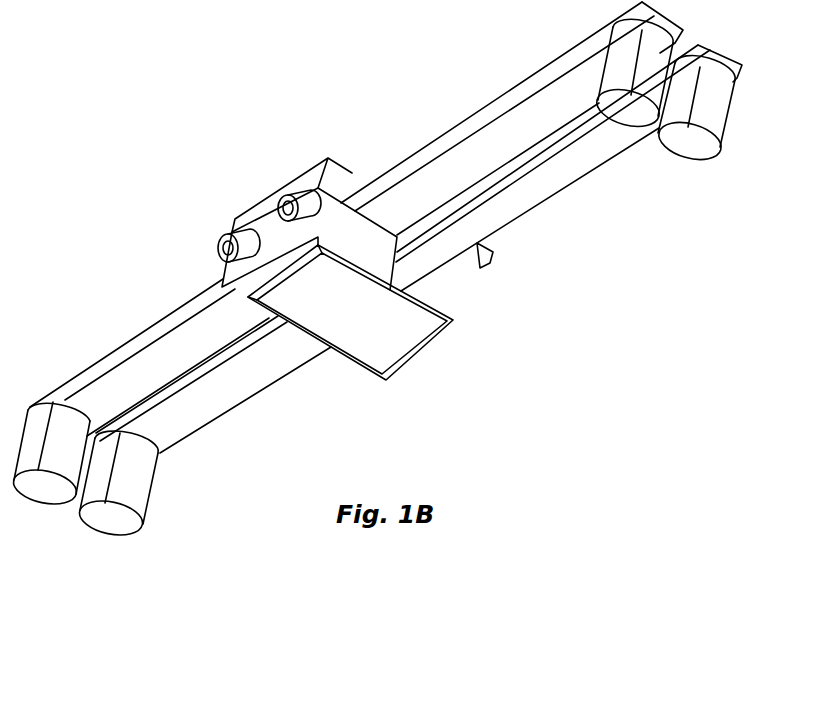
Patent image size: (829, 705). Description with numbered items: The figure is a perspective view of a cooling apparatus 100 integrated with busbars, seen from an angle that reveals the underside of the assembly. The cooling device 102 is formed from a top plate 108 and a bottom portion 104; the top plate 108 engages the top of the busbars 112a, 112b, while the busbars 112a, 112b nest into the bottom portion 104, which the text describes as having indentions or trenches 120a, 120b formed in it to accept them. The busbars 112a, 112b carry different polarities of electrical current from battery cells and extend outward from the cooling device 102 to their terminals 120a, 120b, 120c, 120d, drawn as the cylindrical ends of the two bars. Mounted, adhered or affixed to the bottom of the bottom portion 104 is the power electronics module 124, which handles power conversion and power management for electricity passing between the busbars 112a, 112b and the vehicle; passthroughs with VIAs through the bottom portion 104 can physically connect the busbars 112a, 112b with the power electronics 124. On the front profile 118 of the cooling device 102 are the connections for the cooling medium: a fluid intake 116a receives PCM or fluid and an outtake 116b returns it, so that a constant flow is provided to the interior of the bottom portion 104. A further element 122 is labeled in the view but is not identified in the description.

The cooling apparatus 100 is at (107, 147).
The cooling device 102 is at (273, 130).
The bottom portion 104 is at (476, 295).
The top plate 108 is at (261, 196).
The busbar 112a is at (493, 123).
The busbar 112b is at (540, 206).
The fluid intake 116a is at (276, 209).
The outtake 116b is at (216, 247).
The front profile 118 is at (216, 250).
The terminal 120a is at (377, 218).
The terminal 120b is at (438, 256).
The terminal 120c is at (621, 115).
The terminal 120d is at (719, 140).
The tab 122 is at (410, 255).
The power electronics module 124 is at (393, 350).